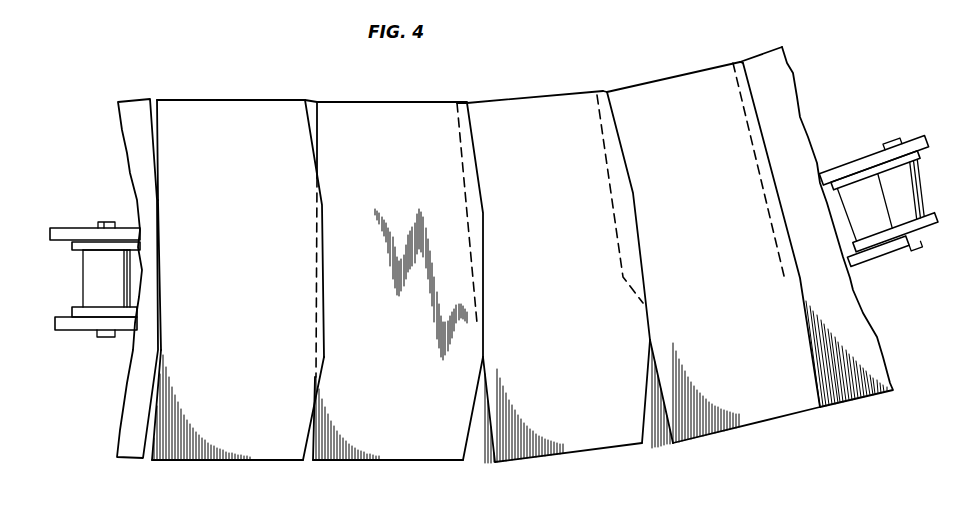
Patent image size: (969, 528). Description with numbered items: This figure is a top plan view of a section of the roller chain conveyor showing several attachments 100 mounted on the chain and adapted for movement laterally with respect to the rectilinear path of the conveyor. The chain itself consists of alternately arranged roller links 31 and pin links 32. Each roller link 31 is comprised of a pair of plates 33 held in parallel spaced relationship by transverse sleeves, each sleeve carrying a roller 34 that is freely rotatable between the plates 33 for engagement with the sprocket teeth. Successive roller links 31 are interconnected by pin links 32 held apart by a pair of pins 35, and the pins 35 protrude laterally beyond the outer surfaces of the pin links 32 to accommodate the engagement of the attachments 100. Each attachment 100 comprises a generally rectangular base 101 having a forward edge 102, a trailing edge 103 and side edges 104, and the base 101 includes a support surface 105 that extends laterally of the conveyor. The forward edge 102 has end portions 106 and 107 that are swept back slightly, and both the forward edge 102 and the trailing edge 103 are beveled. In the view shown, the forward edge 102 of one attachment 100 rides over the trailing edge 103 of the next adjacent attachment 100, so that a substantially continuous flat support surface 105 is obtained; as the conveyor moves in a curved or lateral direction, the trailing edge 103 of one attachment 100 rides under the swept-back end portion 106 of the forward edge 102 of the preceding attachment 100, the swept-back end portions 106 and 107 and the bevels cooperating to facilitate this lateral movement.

The attachment 100 is at (217, 463).
The base 101 is at (283, 450).
The forward edge 102 is at (325, 263).
The trailing edge 103 is at (158, 123).
The side edges 104 is at (236, 98).
The support surface 105 is at (249, 282).
The swept-back end portion 106 is at (311, 115).
The swept-back end portion 107 is at (308, 432).
The roller link 31 is at (72, 241).
The pin link 32 is at (60, 228).
The plate 33 is at (80, 250).
The roller 34 is at (112, 281).
The pin 35 is at (105, 222).